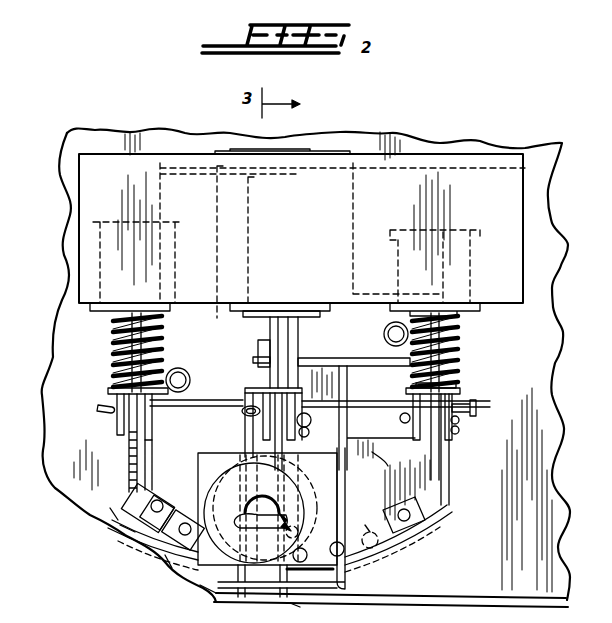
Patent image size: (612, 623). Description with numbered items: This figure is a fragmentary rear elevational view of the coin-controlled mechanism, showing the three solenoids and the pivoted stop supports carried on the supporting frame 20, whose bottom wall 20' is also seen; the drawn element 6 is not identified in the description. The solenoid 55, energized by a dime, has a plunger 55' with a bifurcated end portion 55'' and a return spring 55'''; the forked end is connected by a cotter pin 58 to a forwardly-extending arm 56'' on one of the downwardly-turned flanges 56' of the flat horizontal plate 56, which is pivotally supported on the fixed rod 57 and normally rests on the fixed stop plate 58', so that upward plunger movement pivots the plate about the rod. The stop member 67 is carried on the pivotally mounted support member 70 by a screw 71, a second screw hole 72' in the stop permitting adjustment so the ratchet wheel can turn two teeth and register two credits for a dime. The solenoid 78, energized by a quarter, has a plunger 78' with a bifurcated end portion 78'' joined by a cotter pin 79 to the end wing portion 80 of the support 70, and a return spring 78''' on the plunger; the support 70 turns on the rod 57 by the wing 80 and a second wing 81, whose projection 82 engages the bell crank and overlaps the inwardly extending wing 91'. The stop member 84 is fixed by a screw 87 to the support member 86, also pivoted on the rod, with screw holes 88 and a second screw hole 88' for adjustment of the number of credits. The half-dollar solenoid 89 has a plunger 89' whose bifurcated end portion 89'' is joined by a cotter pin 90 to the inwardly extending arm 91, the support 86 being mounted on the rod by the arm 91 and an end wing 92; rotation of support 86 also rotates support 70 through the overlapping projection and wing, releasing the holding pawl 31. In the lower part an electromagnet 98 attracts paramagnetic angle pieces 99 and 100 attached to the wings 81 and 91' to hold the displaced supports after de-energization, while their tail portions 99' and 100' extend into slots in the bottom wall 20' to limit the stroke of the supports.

The machine frame 6 is at (128, 606).
The supporting frame 20 is at (200, 604).
The bottom wall 20' is at (317, 612).
The pawl 31 is at (158, 596).
The solenoid 55 is at (447, 266).
The plunger 55' is at (461, 353).
The bifurcated end portion 55'' is at (405, 427).
The return spring 55''' is at (466, 351).
The flat horizontal plate 56 is at (356, 402).
The downwardly-turned flanges 56' is at (459, 378).
The forwardly-extending arm 56'' is at (443, 437).
The fixed rod 57 is at (216, 398).
The cotter pin 58 is at (385, 377).
The fixed stop plate 58' is at (374, 467).
The stop member 67 is at (116, 515).
The support member 70 is at (180, 463).
The screw 71 is at (131, 523).
The second screw hole 72' is at (160, 539).
The solenoid 78 is at (274, 232).
The plunger 78' is at (122, 353).
The bifurcated end portion 78'' is at (113, 418).
The return spring 78''' is at (115, 351).
The cotter pin 79 is at (98, 409).
The end wing portion 80 is at (129, 455).
The second wing 81 is at (245, 430).
The projection 82 is at (300, 462).
The stop member 84 is at (431, 540).
The support member 86 is at (370, 532).
The screw 87 is at (425, 522).
The screw holes 88 is at (330, 523).
The second screw hole 88' is at (368, 518).
The solenoid 89 is at (219, 242).
The plunger 89' is at (286, 349).
The bifurcated end portion 89'' is at (304, 431).
The cotter pin 90 is at (242, 412).
The inwardly extending arm 91 is at (316, 425).
The inwardly extending wing 91' is at (311, 522).
The end wing 92 is at (450, 472).
The electromagnet 98 is at (260, 509).
The angle piece 99 is at (253, 512).
The tail portion 99' is at (231, 601).
The angle piece 100 is at (307, 541).
The tail portion 100' is at (288, 603).